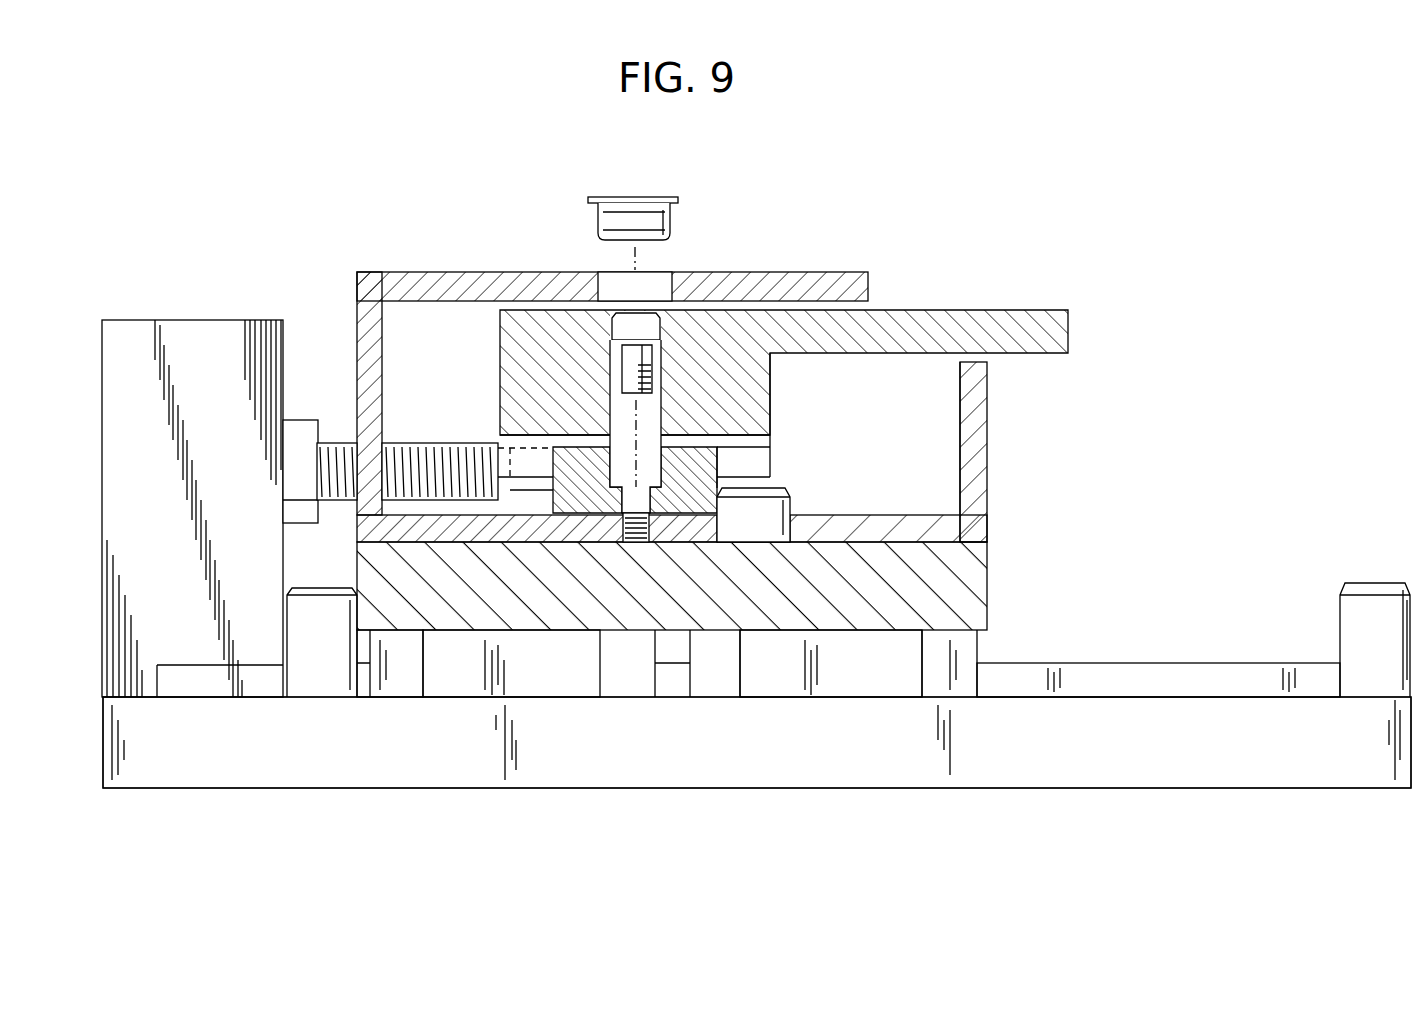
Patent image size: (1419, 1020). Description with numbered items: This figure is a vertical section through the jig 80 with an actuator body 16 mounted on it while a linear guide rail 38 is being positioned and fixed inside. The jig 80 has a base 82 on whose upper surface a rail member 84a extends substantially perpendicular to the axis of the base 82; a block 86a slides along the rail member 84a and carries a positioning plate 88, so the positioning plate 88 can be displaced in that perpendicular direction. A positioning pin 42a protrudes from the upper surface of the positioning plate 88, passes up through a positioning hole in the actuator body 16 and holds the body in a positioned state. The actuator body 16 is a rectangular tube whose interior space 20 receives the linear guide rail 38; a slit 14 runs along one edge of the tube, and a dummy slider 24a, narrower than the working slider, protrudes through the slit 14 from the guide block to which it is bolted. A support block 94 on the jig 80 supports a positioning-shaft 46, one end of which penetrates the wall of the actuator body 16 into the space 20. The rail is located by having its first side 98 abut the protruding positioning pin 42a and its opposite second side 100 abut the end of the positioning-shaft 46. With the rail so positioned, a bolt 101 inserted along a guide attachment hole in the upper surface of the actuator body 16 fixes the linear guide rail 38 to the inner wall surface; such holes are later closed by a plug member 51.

The slit 14 is at (973, 362).
The actuator body 16 is at (766, 270).
The space 20 is at (825, 465).
The dummy slider 24a is at (907, 327).
The linear guide rail 38 is at (587, 495).
The positioning pin 42a is at (760, 513).
The positioning-shaft 46 is at (452, 443).
The plug member 51 is at (641, 215).
The jig 80 is at (1030, 787).
The base 82 is at (680, 758).
The rail member 84a is at (1140, 675).
The block 86a is at (540, 680).
The positioning plate 88 is at (443, 612).
The support block 94 is at (197, 355).
The first side 98 is at (717, 463).
The second side 100 is at (545, 502).
The bolt 101 is at (636, 327).